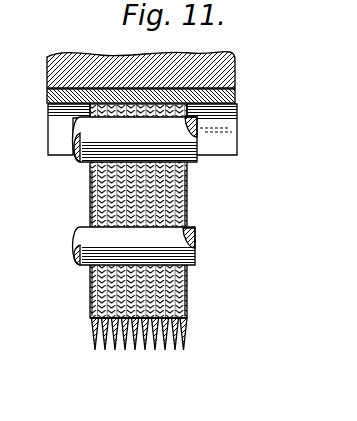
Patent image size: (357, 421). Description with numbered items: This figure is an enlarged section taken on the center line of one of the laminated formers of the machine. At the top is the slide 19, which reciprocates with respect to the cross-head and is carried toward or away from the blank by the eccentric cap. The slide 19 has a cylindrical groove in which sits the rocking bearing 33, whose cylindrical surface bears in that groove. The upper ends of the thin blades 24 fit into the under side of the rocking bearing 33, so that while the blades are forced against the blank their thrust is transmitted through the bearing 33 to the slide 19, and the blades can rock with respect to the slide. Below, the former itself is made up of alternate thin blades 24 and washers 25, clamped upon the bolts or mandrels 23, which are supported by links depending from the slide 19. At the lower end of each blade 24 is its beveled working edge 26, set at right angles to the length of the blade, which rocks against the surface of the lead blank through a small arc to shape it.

The slide 19 is at (233, 54).
The rocking bearing 33 is at (233, 130).
The bolt or mandrel 23 is at (192, 162).
The thin blade 24 is at (110, 309).
The washer 25 is at (170, 312).
The beveled working edge 26 is at (97, 350).